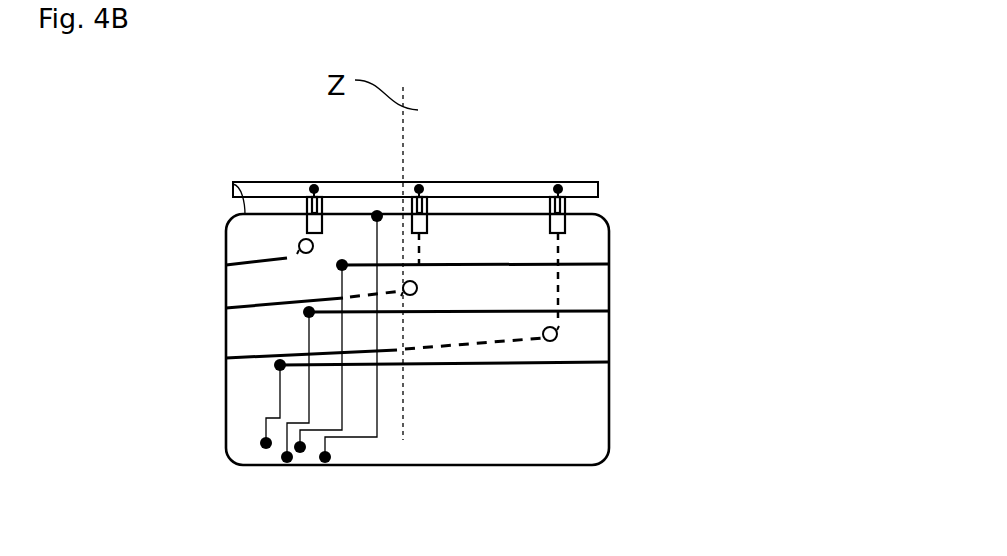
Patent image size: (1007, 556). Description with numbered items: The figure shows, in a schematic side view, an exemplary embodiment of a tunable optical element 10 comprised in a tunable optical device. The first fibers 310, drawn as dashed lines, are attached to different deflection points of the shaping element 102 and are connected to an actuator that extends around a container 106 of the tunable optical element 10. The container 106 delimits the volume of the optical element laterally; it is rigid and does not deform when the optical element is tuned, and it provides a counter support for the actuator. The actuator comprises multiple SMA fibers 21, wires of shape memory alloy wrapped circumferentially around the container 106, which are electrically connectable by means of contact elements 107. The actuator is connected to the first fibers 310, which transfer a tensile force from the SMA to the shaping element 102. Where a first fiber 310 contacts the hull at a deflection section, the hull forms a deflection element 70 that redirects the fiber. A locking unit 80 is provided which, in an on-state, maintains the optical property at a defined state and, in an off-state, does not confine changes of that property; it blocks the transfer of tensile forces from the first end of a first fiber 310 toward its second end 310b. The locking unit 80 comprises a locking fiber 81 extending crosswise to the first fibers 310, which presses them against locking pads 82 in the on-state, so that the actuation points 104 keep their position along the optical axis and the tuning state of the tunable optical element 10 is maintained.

The tunable optical element 10 is at (778, 232).
The SMA fibers 21 is at (241, 309).
The deflection element 70 is at (552, 342).
The locking unit 80 is at (173, 105).
The locking fiber 81 is at (233, 184).
The locking pads 82 is at (307, 197).
The shaping element 102 is at (527, 193).
The actuation points 104 is at (425, 188).
The container 106 is at (607, 275).
The contact elements 107 is at (285, 463).
The first fibers 310 is at (307, 229).
The second end of the first fiber 310b is at (566, 206).